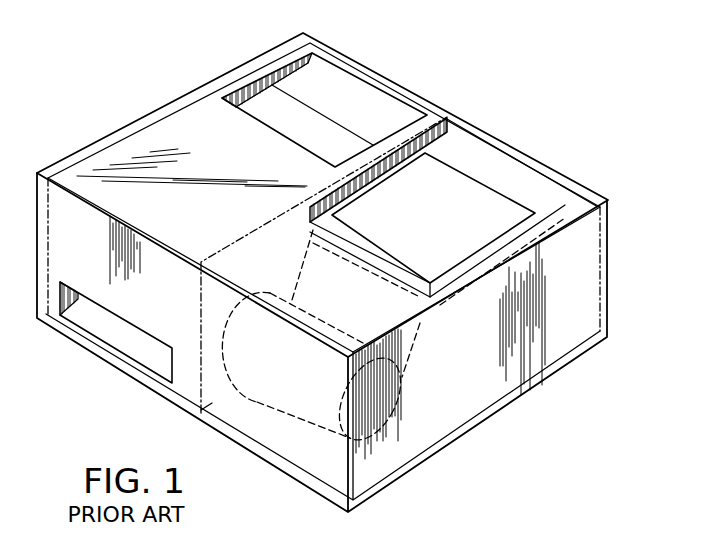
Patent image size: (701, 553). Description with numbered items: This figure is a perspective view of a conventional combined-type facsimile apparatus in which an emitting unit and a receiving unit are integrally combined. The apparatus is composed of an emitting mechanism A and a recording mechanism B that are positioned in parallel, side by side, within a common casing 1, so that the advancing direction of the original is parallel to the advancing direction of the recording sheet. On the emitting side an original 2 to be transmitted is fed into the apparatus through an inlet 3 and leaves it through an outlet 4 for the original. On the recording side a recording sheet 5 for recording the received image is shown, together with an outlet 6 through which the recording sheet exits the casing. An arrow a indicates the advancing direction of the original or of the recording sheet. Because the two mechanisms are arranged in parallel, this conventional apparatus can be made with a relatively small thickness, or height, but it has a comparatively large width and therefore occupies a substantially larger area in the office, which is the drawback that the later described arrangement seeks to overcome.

The common casing 1 is at (152, 138).
The original 2 is at (337, 131).
The inlet 3 is at (273, 114).
The outlet 4 is at (148, 360).
The recording sheet 5 is at (493, 200).
The outlet for recording sheet 6 is at (405, 261).
The arrow a is at (345, 92).
The emitting mechanism A is at (322, 30).
The recording mechanism B is at (608, 188).